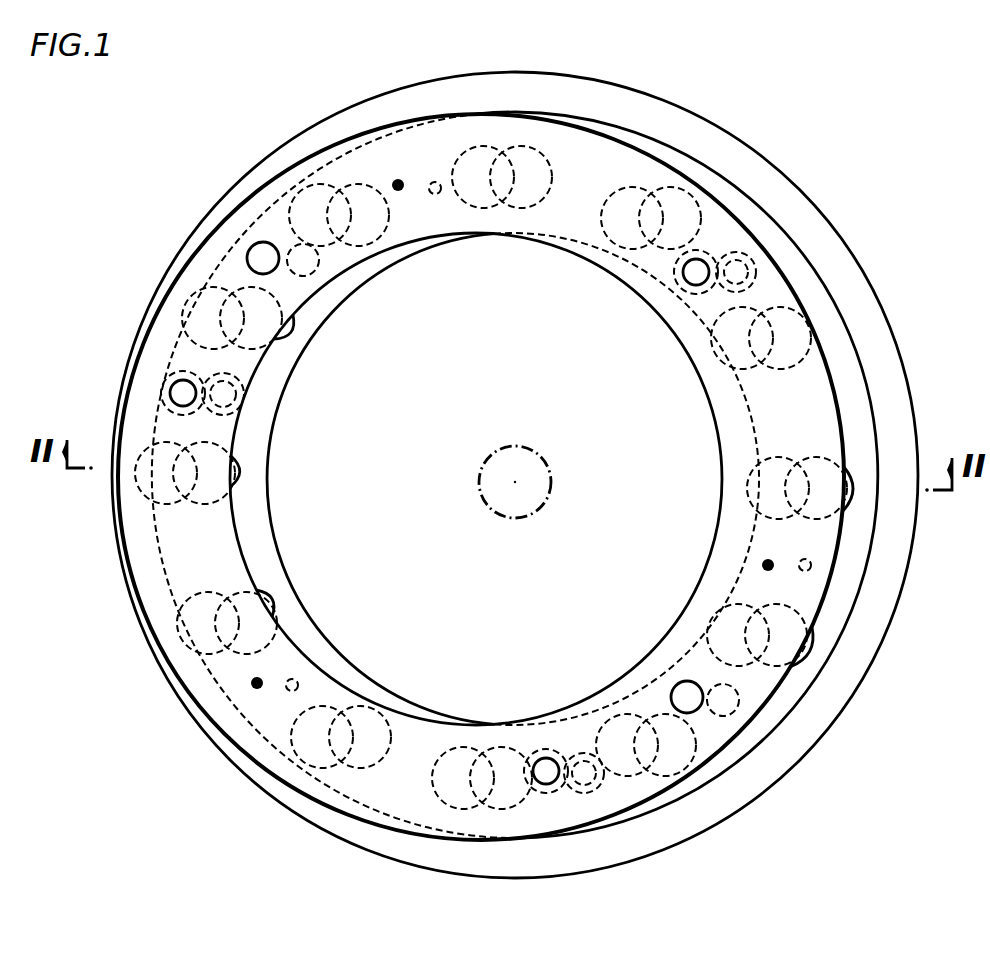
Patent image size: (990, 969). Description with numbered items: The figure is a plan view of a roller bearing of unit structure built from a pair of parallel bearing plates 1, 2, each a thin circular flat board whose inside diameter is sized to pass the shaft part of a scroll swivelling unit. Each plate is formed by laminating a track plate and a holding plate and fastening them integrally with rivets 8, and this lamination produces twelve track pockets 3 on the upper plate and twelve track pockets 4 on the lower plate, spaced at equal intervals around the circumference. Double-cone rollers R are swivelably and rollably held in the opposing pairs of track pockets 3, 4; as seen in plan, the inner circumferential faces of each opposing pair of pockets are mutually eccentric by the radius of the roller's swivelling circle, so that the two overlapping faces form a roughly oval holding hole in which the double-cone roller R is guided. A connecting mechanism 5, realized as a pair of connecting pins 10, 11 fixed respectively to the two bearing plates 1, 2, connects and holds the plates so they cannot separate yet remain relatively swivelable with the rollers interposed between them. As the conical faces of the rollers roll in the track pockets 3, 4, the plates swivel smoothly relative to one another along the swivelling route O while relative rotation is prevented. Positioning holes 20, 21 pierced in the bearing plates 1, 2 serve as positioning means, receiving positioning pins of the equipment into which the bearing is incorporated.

The bearing plate 1 is at (738, 218).
The bearing plate 2 is at (858, 362).
The track pocket 3 is at (481, 145).
The track pocket 4 is at (372, 178).
The connecting mechanism 5 is at (243, 405).
The rivet 8 is at (398, 183).
The connecting pin 10 is at (180, 393).
The connecting pin 11 is at (250, 389).
The positioning hole 20 is at (260, 252).
The positioning hole 21 is at (316, 265).
The double-cone roller R is at (352, 205).
The swivelling route O is at (553, 480).